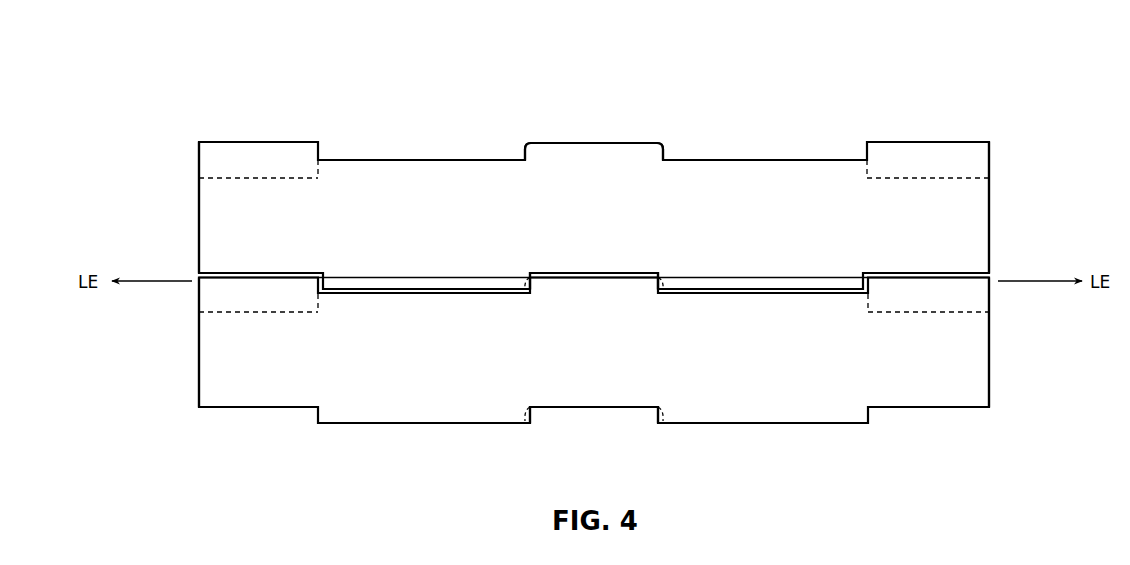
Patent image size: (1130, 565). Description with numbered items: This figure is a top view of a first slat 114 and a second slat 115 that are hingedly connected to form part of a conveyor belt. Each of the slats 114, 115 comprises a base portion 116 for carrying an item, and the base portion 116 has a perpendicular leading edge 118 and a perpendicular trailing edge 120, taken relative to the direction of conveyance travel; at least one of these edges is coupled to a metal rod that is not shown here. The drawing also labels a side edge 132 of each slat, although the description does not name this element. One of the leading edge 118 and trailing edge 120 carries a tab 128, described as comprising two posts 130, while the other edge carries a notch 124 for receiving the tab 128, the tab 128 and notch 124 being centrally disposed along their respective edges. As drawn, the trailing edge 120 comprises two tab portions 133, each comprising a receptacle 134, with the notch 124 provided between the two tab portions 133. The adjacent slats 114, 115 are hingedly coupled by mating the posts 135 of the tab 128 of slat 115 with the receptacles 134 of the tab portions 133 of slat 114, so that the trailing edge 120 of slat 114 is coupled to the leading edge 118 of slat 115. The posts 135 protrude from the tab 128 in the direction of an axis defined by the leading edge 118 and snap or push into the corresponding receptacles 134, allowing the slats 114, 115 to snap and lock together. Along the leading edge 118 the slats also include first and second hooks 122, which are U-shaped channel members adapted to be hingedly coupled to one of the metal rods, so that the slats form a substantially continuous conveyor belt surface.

The first slat 114 is at (1052, 211).
The second slat 115 is at (1040, 369).
The base portion 116 is at (448, 222).
The leading edge 118 is at (930, 142).
The trailing edge 120 is at (990, 272).
The hooks 122 is at (199, 160).
The notch 124 is at (623, 268).
The tab 128 is at (595, 80).
The posts 130 is at (199, 230).
The side edge 132 is at (990, 218).
The tab portions 133 is at (486, 288).
The receptacle 134 is at (663, 273).
The posts 135 is at (527, 152).